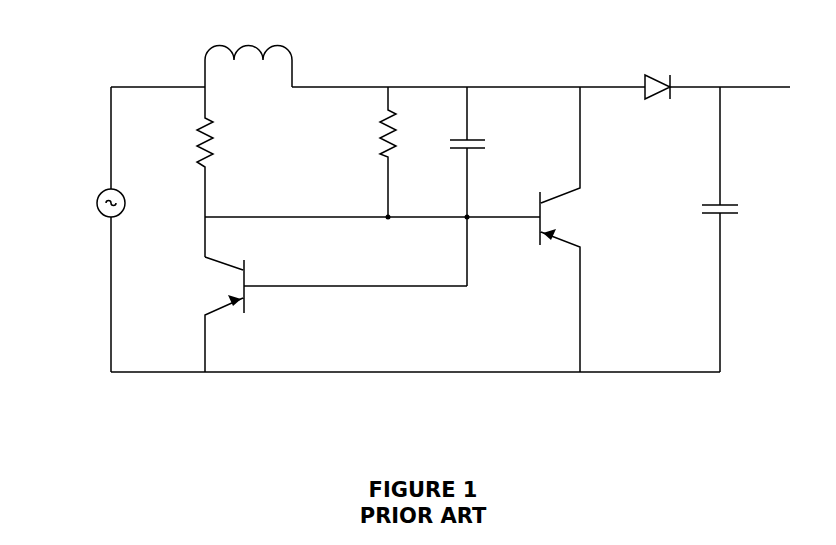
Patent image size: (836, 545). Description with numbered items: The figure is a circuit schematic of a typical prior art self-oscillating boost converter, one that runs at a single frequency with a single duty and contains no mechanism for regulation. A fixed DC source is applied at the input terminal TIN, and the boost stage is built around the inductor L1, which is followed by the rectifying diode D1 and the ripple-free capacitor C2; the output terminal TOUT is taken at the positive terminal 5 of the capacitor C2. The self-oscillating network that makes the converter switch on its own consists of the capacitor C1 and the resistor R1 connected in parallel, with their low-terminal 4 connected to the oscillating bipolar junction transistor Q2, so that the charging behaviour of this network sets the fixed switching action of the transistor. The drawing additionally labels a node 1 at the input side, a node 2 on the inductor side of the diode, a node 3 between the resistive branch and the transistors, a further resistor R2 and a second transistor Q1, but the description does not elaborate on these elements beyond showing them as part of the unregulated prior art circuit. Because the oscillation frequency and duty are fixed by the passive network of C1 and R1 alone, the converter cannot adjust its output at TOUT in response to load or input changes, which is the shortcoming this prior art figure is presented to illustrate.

The input node 1 is at (158, 76).
The switching node 2 is at (468, 81).
The feedback node 3 is at (372, 217).
The low-terminal 4 is at (355, 307).
The positive terminal 5 is at (730, 78).
The inductor L1 is at (248, 59).
The resistor R1 is at (377, 152).
The resistor R2 is at (195, 172).
The capacitor C1 is at (477, 186).
The ripple-free capacitor C2 is at (730, 229).
The rectifying diode D1 is at (657, 76).
The transistor Q1 is at (583, 229).
The oscillating bipolar junction transistor Q2 is at (201, 314).
The input terminal TIN is at (78, 218).
The output terminal TOUT is at (755, 71).